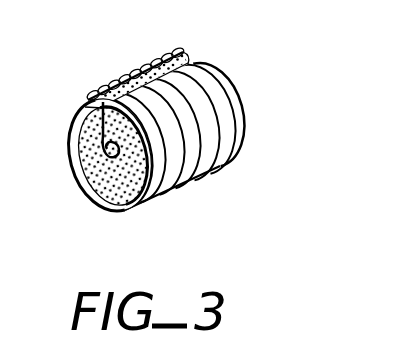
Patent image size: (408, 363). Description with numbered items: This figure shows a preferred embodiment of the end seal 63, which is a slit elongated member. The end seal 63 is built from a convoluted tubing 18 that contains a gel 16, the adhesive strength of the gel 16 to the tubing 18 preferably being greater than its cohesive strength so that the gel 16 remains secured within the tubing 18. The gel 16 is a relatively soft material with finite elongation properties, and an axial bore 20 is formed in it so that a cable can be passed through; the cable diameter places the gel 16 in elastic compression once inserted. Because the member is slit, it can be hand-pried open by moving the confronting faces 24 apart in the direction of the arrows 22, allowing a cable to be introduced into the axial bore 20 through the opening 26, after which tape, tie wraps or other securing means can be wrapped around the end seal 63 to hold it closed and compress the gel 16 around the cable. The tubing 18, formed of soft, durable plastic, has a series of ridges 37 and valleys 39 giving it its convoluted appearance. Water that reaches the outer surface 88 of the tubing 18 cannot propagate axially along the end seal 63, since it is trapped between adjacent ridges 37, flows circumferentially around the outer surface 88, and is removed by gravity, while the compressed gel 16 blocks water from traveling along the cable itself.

The end seal 63 is at (153, 131).
The confronting faces 24 is at (165, 56).
The arrows 22 is at (196, 133).
The opening 26 is at (107, 138).
The valleys 39 is at (228, 115).
The axial bore 20 is at (97, 158).
The ridges 37 is at (238, 134).
The gel 16 is at (98, 190).
The convoluted tubing 18 is at (161, 204).
The outer surface 88 is at (200, 168).